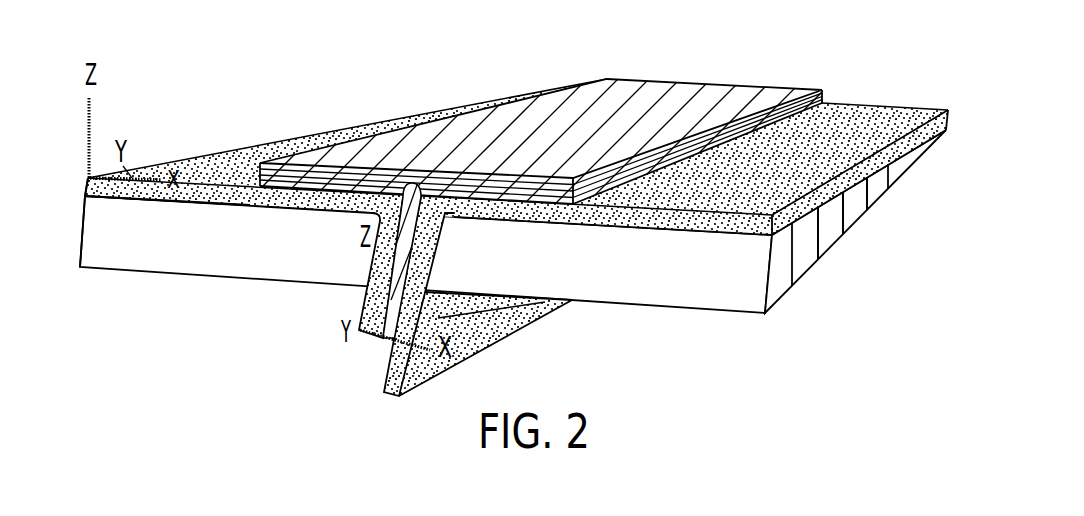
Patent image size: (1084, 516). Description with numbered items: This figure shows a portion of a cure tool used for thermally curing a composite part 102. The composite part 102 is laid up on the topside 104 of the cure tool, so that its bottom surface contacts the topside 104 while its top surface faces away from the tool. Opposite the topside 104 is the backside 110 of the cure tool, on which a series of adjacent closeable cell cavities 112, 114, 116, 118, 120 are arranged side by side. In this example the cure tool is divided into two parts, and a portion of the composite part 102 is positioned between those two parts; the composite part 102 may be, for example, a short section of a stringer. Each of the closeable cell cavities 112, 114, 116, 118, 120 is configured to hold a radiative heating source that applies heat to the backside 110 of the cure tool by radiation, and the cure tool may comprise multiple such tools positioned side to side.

The composite part 102 is at (602, 107).
The topside 104 is at (207, 153).
The backside 110 is at (107, 193).
The closeable cell cavity 112 is at (663, 285).
The closeable cell cavity 114 is at (800, 267).
The closeable cell cavity 116 is at (830, 235).
The closeable cell cavity 118 is at (862, 208).
The closeable cell cavity 120 is at (885, 175).